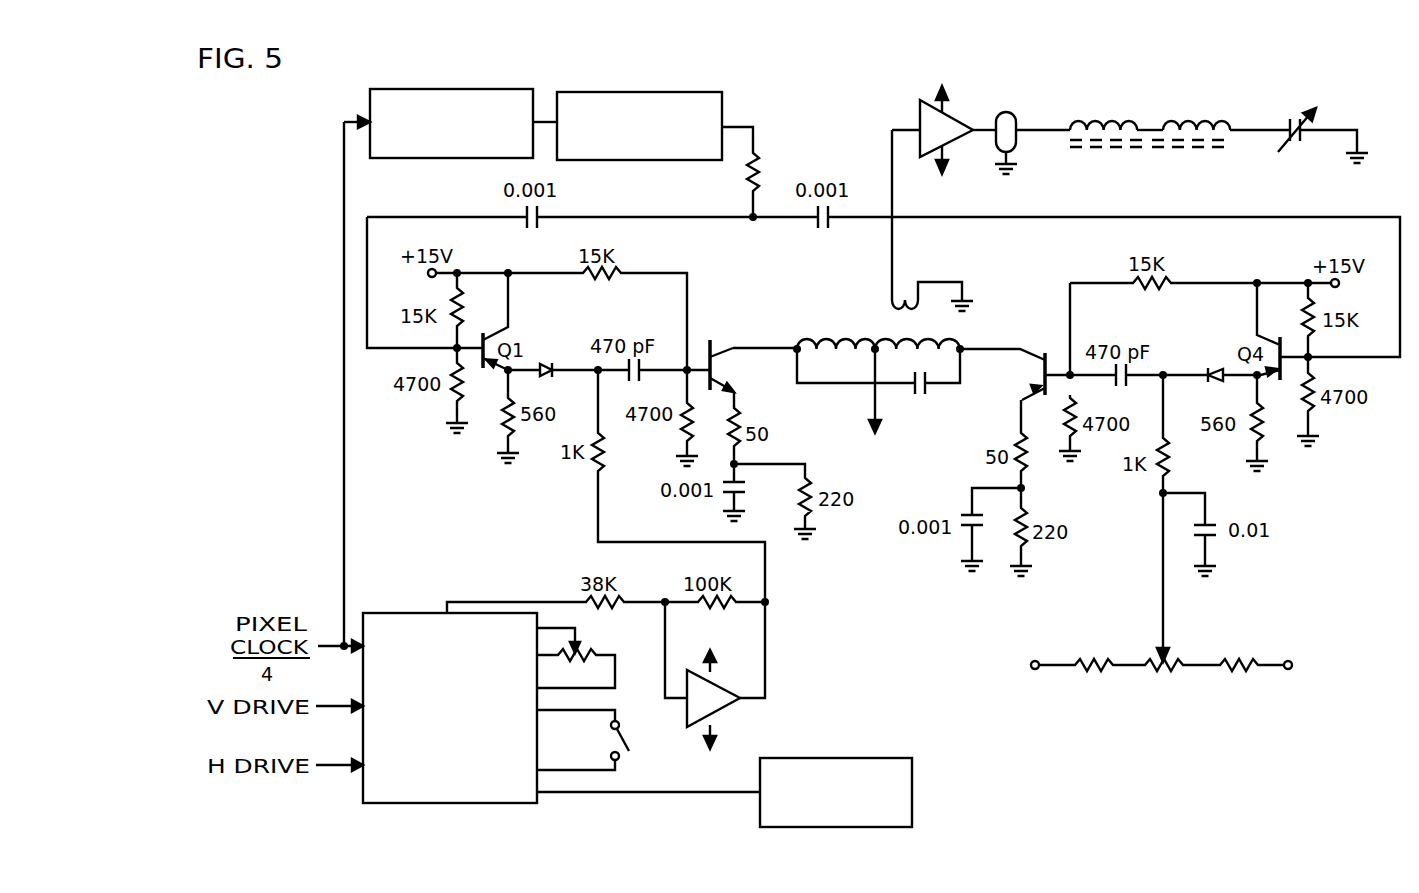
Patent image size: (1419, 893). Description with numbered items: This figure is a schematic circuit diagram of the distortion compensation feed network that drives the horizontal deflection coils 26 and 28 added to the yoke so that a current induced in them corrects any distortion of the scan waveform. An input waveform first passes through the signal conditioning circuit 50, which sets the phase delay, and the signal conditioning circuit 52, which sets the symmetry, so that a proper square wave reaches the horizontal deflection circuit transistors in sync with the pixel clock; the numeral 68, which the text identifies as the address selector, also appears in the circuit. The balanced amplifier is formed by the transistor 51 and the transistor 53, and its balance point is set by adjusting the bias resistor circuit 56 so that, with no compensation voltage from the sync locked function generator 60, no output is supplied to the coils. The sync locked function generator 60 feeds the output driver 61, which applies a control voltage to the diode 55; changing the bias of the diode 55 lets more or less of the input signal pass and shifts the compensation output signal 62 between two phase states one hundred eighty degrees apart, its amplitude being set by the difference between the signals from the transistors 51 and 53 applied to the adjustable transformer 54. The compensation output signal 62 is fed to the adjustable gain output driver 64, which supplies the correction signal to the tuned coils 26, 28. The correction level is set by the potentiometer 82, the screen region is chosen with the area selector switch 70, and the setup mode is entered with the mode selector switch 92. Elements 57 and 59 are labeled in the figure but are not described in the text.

The signal conditioning circuit 50 is at (429, 168).
The signal conditioning circuit 52 is at (658, 168).
The address selector 68 is at (736, 172).
The adjustable gain output driver 64 is at (918, 117).
The compensation output signal 62 is at (893, 250).
The horizontal deflection coil 26 is at (1115, 122).
The horizontal deflection coil 28 is at (1209, 122).
The variable capacitor 59 is at (1298, 119).
The adjustable transformer 54 is at (831, 338).
The diode 55 is at (548, 349).
The transistor 53 is at (723, 345).
The transistor 51 is at (1029, 345).
The diode 57 is at (1198, 355).
The bias resistor circuit 56 is at (1150, 726).
The sync locked function generator 60 is at (422, 610).
The output driver 61 is at (684, 717).
The correction level potentiometer 82 is at (590, 643).
The mode selector switch 92 is at (612, 742).
The area selector switch 70 is at (758, 812).